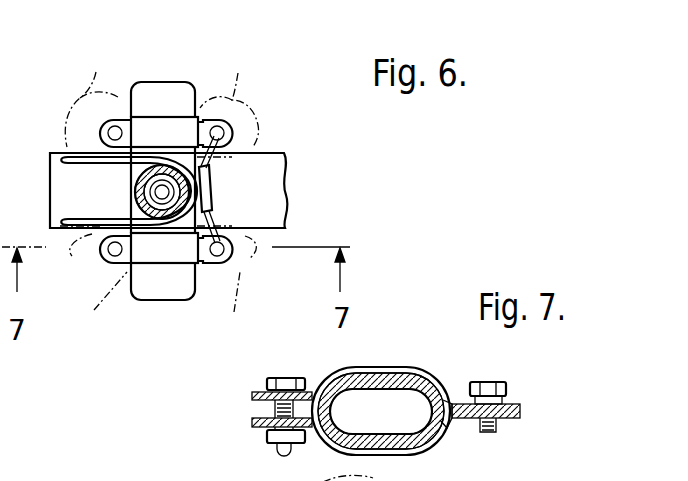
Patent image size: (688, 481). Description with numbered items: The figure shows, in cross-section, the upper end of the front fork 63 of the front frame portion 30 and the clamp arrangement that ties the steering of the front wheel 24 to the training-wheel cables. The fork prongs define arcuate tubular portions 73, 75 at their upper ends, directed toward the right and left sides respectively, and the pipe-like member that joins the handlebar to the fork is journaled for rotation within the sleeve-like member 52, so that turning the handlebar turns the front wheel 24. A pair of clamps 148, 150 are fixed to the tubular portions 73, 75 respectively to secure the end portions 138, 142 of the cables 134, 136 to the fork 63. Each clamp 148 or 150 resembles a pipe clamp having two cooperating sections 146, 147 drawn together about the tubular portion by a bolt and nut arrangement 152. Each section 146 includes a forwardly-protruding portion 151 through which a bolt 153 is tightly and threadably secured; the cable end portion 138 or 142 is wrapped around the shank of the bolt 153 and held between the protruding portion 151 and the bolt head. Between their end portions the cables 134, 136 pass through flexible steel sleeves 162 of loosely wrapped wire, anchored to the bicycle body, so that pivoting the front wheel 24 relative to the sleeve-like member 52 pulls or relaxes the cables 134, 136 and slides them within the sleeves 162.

In FIG. 6, the front wheel 24 is at (288, 168).
In FIG. 6, the front frame portion 30 is at (162, 68).
In FIG. 6, the sleeve-like member 52 is at (133, 192).
In FIG. 6, the front fork 63 is at (176, 80).
In FIG. 6, the arcuate tubular portion 73 is at (162, 300).
In FIG. 7, the arcuate tubular portion 73 is at (407, 368).
In FIG. 6, the arcuate tubular portion 75 is at (140, 77).
In FIG. 6, the cable 134 is at (56, 219).
In FIG. 6, the cable 136 is at (56, 163).
In FIG. 6, the end portion 138 is at (213, 163).
In FIG. 6, the end portion 142 is at (207, 210).
In FIG. 7, the end portion 142 is at (500, 402).
In FIG. 7, the clamp section 146 is at (385, 453).
In FIG. 7, the clamp section 147 is at (366, 369).
In FIG. 6, the clamp 148 is at (162, 255).
In FIG. 7, the clamp 148 is at (383, 368).
In FIG. 6, the clamp 150 is at (160, 125).
In FIG. 7, the forwardly-protruding portion 151 is at (520, 411).
In FIG. 6, the bolt and nut arrangement 152 is at (100, 252).
In FIG. 7, the bolt and nut arrangement 152 is at (282, 378).
In FIG. 6, the bolt 153 is at (242, 257).
In FIG. 7, the bolt 153 is at (492, 378).
In FIG. 6, the flexible steel sleeve 162 is at (97, 207).